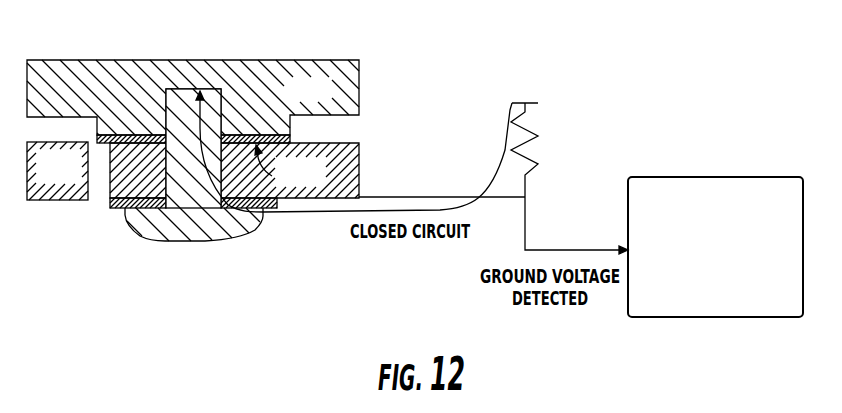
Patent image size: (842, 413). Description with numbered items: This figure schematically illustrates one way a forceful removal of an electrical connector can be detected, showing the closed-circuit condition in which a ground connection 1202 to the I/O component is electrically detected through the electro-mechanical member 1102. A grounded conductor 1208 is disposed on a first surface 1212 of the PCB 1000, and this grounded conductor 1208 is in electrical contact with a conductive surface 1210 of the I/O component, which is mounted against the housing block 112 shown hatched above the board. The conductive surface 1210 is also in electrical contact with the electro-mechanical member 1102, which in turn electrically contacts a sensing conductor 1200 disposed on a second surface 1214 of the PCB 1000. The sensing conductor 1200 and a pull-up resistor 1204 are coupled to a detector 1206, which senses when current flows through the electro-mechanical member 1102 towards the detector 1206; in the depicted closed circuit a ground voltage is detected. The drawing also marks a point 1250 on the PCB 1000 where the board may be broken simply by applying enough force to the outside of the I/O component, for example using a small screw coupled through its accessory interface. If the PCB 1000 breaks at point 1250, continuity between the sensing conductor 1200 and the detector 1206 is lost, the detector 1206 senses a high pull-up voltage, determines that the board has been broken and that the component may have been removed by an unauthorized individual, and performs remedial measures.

The housing block 112 is at (334, 62).
The PCB 1000 is at (77, 181).
The electro-mechanical member 1102 is at (169, 229).
The sensing conductor 1200 is at (105, 212).
The ground connection 1202 is at (129, 130).
The pull-up resistor 1204 is at (595, 165).
The detector 1206 is at (695, 273).
The grounded conductor 1208 is at (296, 136).
The conductive surface 1210 is at (253, 137).
The first surface 1212 is at (320, 184).
The second surface 1214 is at (333, 191).
The point 1250 is at (318, 220).